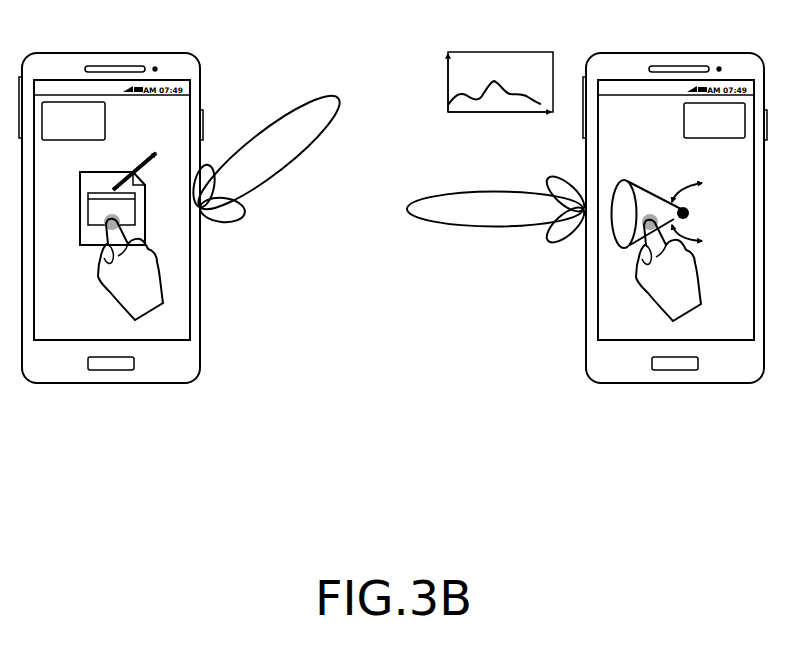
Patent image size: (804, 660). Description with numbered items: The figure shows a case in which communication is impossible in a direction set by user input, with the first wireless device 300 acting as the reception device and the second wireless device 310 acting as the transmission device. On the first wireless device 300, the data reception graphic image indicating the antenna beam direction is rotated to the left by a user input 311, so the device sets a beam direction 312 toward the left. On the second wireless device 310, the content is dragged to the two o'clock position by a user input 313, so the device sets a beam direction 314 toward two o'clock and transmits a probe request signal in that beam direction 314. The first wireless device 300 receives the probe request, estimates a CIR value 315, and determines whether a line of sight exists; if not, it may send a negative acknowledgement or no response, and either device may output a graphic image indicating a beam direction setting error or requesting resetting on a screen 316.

The first wireless device 300 is at (717, 53).
The second wireless device 310 is at (162, 53).
The user input 311 is at (697, 279).
The beam direction 312 is at (460, 190).
The user input 313 is at (100, 277).
The beam direction 314 is at (312, 142).
The CIR value 315 is at (513, 52).
The screen 316 is at (53, 327).